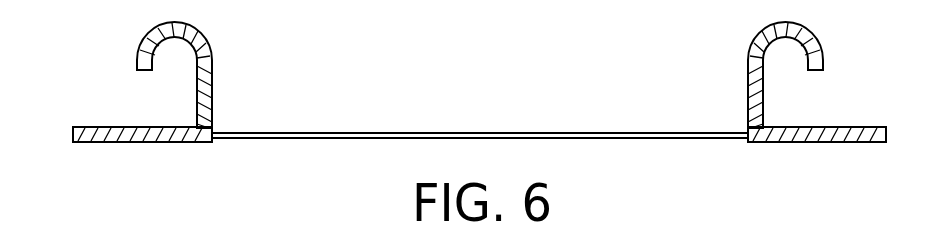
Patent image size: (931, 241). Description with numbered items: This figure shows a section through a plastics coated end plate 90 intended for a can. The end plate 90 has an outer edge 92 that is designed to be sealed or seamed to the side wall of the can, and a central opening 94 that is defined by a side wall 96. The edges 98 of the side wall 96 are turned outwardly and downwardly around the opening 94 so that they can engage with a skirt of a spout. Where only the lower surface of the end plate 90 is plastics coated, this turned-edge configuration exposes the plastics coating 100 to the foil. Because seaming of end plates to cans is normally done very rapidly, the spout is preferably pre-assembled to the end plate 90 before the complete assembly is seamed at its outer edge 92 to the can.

The end plate 90 is at (821, 115).
The outer edge 92 is at (72, 125).
The central opening 94 is at (518, 130).
The side wall 96 is at (764, 96).
The edges 98 is at (137, 60).
The plastics coating 100 is at (846, 143).